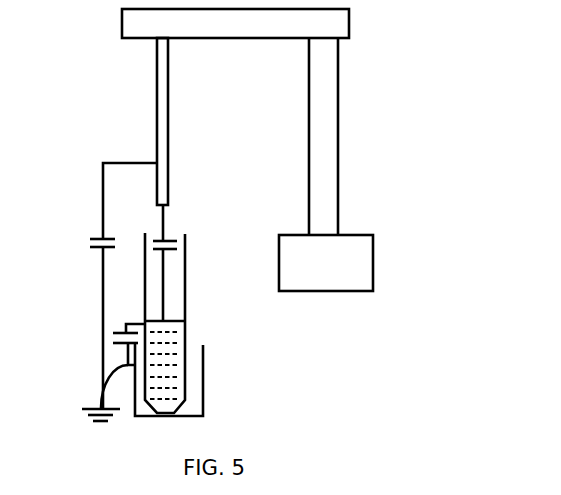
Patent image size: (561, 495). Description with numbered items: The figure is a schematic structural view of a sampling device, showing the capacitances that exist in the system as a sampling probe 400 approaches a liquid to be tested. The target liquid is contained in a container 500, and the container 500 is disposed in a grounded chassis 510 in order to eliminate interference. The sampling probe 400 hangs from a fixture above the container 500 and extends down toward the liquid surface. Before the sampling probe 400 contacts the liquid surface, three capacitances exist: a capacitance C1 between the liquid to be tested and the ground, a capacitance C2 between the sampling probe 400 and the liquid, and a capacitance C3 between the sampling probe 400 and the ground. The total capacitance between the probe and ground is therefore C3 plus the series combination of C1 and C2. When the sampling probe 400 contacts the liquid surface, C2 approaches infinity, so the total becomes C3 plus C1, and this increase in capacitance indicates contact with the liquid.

The sampling probe 400 is at (157, 90).
The container 500 is at (187, 260).
The grounded chassis 510 is at (203, 378).
The capacitance between the liquid to be tested and the ground C1 is at (123, 354).
The capacitance between the sampling probe and the liquid to be tested C2 is at (157, 232).
The capacitance between the sampling probe and the ground C3 is at (91, 242).